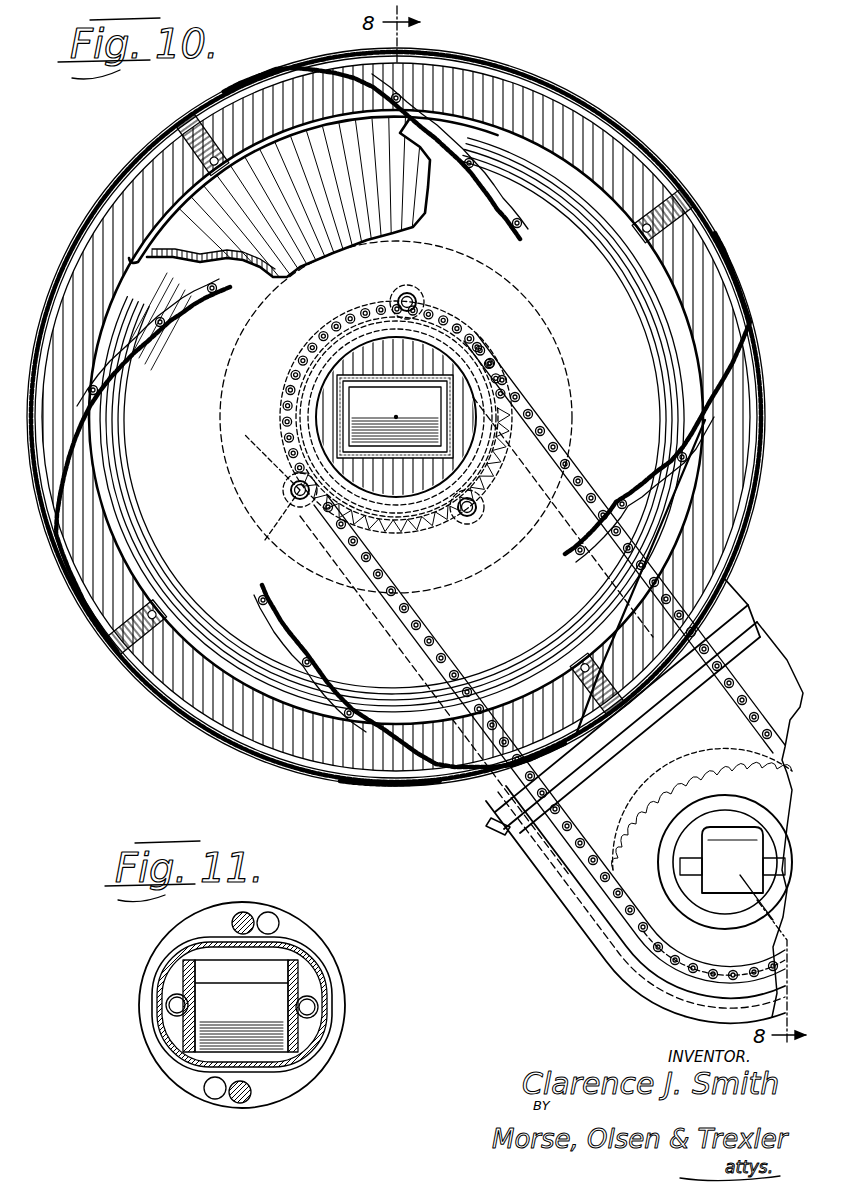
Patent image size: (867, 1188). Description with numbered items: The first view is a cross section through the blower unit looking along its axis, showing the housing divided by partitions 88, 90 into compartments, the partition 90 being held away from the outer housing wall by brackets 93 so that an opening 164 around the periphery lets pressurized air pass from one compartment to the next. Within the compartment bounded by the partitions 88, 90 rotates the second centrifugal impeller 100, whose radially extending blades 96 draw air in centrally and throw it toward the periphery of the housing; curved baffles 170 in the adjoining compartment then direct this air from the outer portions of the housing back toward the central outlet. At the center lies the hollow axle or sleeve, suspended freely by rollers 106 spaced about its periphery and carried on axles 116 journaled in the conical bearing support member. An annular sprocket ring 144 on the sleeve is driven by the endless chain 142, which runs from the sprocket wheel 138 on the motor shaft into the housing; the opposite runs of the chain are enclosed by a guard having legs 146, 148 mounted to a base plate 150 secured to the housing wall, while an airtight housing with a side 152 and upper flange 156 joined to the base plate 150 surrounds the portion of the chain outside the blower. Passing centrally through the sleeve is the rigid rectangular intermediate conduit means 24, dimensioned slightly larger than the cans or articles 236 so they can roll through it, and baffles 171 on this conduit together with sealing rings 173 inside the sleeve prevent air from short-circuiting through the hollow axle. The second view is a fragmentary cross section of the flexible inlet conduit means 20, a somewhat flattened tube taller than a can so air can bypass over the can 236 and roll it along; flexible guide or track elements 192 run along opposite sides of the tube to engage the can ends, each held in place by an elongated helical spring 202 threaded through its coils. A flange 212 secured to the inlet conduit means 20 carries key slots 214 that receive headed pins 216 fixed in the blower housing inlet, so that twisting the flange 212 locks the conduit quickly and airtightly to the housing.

In FIG. 11, the inlet conduit means 20 is at (330, 1032).
In FIG. 10, the intermediate conduit means 24 is at (330, 395).
In FIG. 10, the partition 88 is at (70, 251).
In FIG. 10, the partition 90 is at (123, 277).
In FIG. 10, the brackets 93 is at (186, 143).
In FIG. 10, the radially extending blades 96 is at (258, 165).
In FIG. 10, the second centrifugal impeller 100 is at (290, 138).
In FIG. 10, the rollers 106 is at (468, 281).
In FIG. 10, the axles 116 is at (297, 505).
In FIG. 10, the sprocket wheel 138 is at (607, 962).
In FIG. 10, the endless chain 142 is at (496, 818).
In FIG. 10, the annular sprocket ring 144 is at (483, 502).
In FIG. 10, the leg of chain guard 146 is at (384, 790).
In FIG. 10, the leg of chain guard 148 is at (700, 567).
In FIG. 10, the base plate 150 is at (530, 860).
In FIG. 10, the housing side 152 is at (605, 842).
In FIG. 10, the upper flange 156 is at (645, 740).
In FIG. 10, the opening 164 is at (120, 123).
In FIG. 10, the baffles 170 is at (447, 146).
In FIG. 10, the baffles 171 is at (412, 356).
In FIG. 10, the sealing rings 173 is at (450, 368).
In FIG. 11, the guide or track elements 192 is at (181, 977).
In FIG. 11, the helical spring 202 is at (172, 1013).
In FIG. 11, the flange 212 is at (316, 932).
In FIG. 11, the key slots 214 is at (270, 912).
In FIG. 11, the headed pins 216 is at (242, 912).
In FIG. 10, the cans or articles 236 is at (362, 413).
In FIG. 11, the cans or articles 236 is at (240, 991).